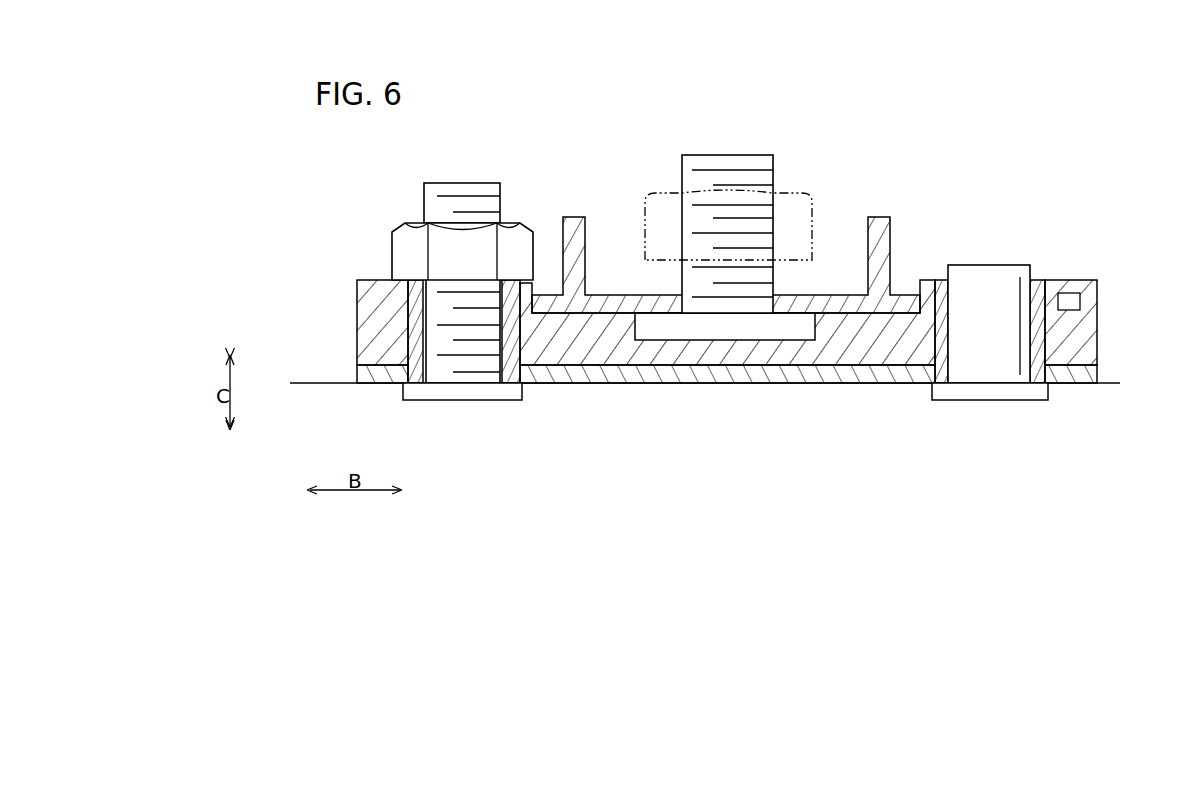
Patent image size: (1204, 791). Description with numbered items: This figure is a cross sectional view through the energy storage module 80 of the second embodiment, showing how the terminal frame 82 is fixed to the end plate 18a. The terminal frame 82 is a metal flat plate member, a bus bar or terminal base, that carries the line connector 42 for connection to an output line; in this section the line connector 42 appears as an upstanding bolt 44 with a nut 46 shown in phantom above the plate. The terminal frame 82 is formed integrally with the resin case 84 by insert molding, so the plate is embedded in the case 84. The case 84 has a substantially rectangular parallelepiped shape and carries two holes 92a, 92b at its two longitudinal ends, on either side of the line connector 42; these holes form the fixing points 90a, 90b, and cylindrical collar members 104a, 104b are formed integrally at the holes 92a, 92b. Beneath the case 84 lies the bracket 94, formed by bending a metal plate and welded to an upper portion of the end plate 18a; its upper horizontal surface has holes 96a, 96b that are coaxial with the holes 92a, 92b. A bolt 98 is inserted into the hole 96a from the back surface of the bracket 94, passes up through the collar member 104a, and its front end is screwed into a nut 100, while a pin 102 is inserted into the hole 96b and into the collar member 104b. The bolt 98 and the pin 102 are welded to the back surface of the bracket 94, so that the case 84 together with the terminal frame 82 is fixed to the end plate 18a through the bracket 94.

The end plate 18a is at (333, 380).
The line connector 42 is at (728, 192).
The bolt 44 is at (760, 157).
The nut (phantom) 46 is at (798, 193).
The energy storage module 80 is at (1073, 170).
The terminal frame 82 is at (838, 287).
The case 84 is at (733, 370).
The fixing point 90a is at (403, 281).
The fixing point 90b is at (1059, 329).
The hole 92a is at (500, 335).
The hole 92b is at (938, 335).
The bracket 94 is at (592, 385).
The hole 96a is at (433, 384).
The hole 96b is at (955, 385).
The bolt 98 is at (465, 187).
The nut 100 is at (403, 233).
The pin 102 is at (992, 262).
The collar member 104a is at (400, 296).
The collar member 104b is at (1044, 352).